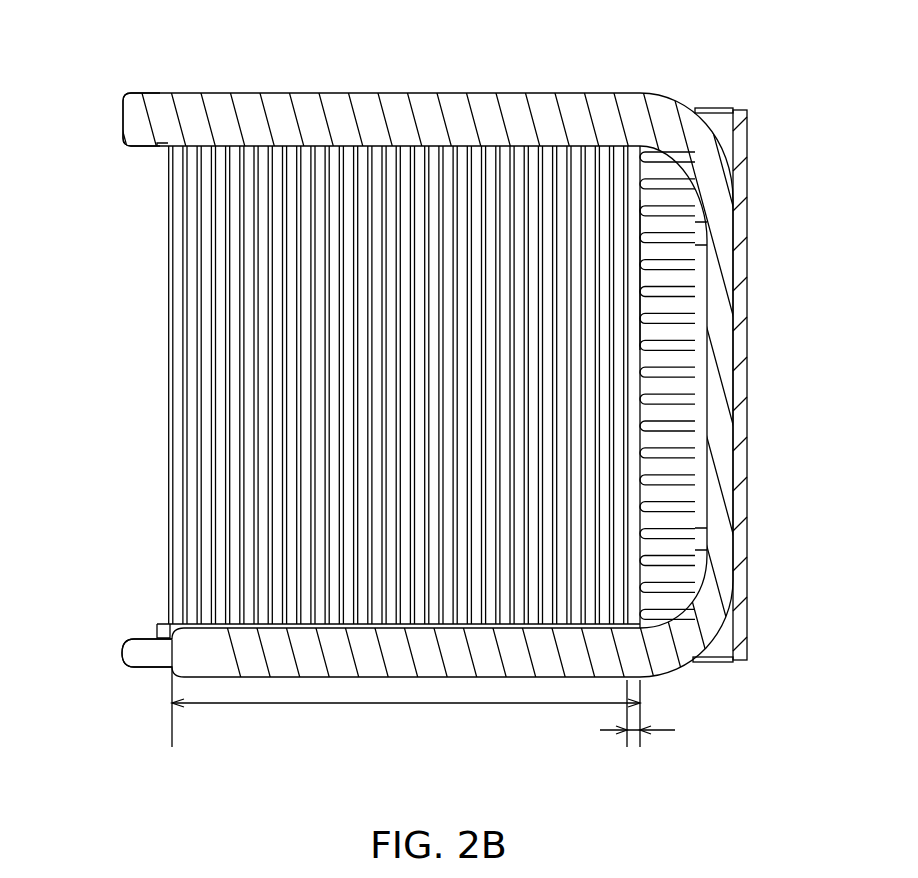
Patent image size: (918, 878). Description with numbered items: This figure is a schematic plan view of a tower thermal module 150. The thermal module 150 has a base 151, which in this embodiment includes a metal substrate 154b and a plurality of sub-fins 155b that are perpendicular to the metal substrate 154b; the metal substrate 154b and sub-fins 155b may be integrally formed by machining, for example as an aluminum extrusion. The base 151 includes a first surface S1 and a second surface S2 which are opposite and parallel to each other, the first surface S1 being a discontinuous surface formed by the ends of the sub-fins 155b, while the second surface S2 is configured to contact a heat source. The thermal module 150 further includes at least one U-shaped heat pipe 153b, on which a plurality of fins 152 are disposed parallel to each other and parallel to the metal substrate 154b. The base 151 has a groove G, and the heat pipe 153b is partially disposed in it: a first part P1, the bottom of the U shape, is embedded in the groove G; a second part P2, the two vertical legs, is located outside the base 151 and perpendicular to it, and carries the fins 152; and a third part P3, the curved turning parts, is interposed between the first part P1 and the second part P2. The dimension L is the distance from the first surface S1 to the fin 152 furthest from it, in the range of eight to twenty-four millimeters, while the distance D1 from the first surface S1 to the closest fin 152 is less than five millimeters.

The thermal module 150 is at (830, 788).
The base 151 is at (459, 348).
The fins 152 is at (168, 360).
The heat pipe 153b is at (167, 108).
The metal substrate 154b is at (707, 117).
The sub-fins 155b is at (647, 208).
The first part P1 is at (722, 314).
The second part P2 is at (363, 108).
The third part P3 is at (703, 147).
The first surface S1 is at (638, 276).
The second surface S2 is at (750, 158).
The groove G is at (722, 647).
The dimension L is at (406, 693).
The distance D1 is at (637, 732).